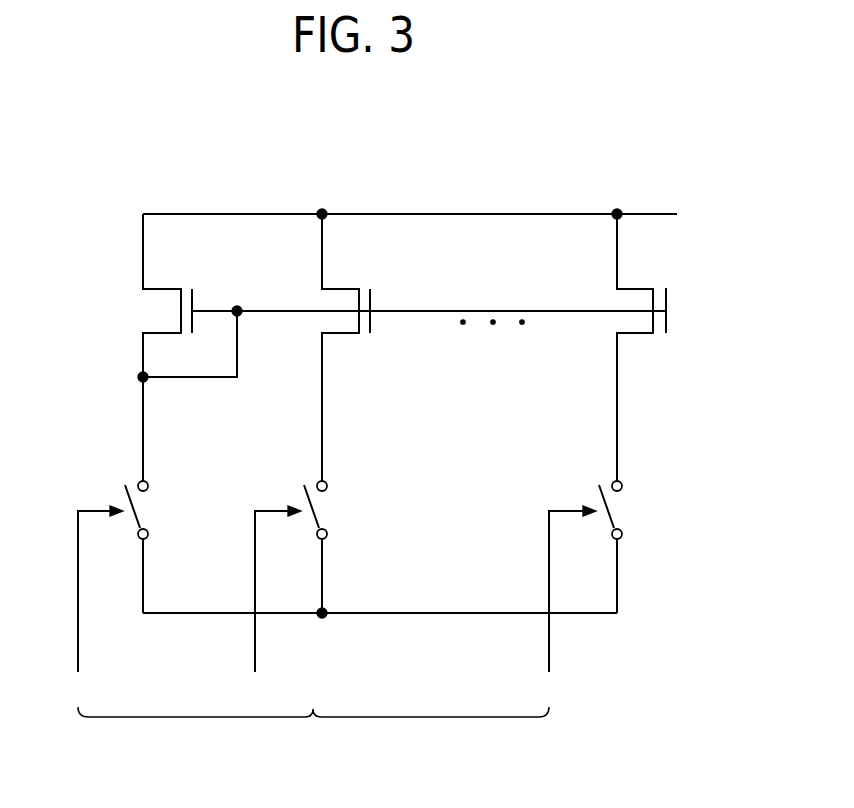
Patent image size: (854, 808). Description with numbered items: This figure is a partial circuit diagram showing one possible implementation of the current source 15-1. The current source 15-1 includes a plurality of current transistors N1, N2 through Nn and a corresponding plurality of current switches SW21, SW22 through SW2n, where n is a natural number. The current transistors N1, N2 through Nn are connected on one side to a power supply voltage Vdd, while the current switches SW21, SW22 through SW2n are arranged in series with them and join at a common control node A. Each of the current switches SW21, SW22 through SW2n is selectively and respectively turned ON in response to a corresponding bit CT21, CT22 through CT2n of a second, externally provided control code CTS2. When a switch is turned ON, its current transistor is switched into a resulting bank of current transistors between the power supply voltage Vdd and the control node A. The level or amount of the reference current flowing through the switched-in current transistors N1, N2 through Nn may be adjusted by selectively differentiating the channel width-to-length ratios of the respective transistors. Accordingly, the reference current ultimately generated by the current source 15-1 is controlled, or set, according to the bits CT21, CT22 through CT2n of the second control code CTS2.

The current source 15-1 is at (618, 153).
The power supply voltage Vdd is at (433, 214).
The current transistor N1 is at (175, 347).
The current transistor N2 is at (451, 347).
The current transistor Nn is at (622, 347).
The current switch SW21 is at (167, 547).
The current switch SW22 is at (346, 547).
The current switch SW2n is at (642, 547).
The control node A is at (380, 628).
The bit of second control code CT21 is at (86, 604).
The bit of second control code CT22 is at (264, 604).
The bit of second control code CT2n is at (559, 604).
The second control code CTS2 is at (313, 730).